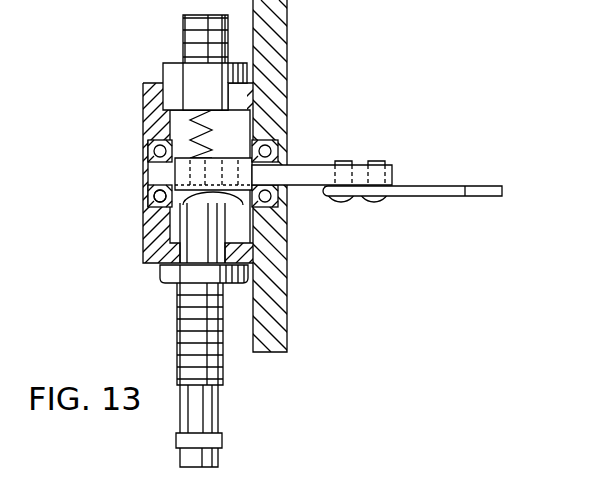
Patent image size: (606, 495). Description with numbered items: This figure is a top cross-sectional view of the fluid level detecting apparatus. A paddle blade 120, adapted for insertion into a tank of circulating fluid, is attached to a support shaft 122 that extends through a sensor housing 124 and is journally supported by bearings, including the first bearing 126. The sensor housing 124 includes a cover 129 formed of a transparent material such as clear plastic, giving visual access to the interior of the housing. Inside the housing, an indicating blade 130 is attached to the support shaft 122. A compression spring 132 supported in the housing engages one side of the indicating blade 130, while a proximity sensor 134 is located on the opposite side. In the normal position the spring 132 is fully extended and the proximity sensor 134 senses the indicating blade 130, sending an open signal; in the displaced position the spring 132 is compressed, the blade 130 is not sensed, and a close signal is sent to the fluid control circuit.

The paddle blade 120 is at (445, 185).
The support shaft 122 is at (357, 170).
The sensor housing 124 is at (238, 66).
The first bearing 126 is at (160, 195).
The cover 129 is at (143, 120).
The indicating blade 130 is at (218, 195).
The compression spring 132 is at (265, 147).
The proximity sensor 134 is at (200, 377).